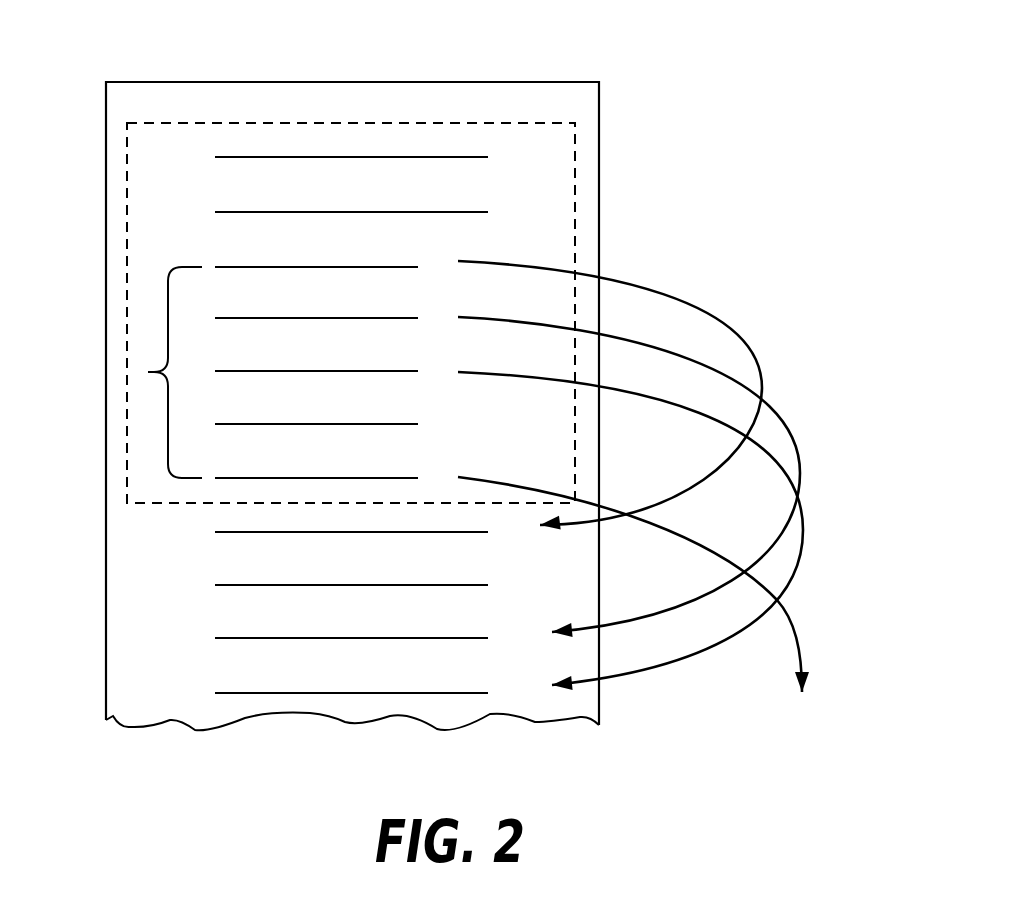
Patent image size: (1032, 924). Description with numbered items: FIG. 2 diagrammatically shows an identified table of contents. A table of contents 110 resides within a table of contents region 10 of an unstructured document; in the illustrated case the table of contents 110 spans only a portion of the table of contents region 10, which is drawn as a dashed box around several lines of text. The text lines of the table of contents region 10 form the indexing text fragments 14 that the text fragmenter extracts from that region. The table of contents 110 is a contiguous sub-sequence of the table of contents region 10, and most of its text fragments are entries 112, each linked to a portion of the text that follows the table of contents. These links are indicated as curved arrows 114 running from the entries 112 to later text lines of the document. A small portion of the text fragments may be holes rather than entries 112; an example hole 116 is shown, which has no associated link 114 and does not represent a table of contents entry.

The table of contents region 10 is at (350, 120).
The indexing text fragments 14 is at (680, 138).
The table of contents 110 is at (265, 372).
The entries 112 is at (395, 318).
The links 114 is at (802, 650).
The hole 116 is at (258, 424).